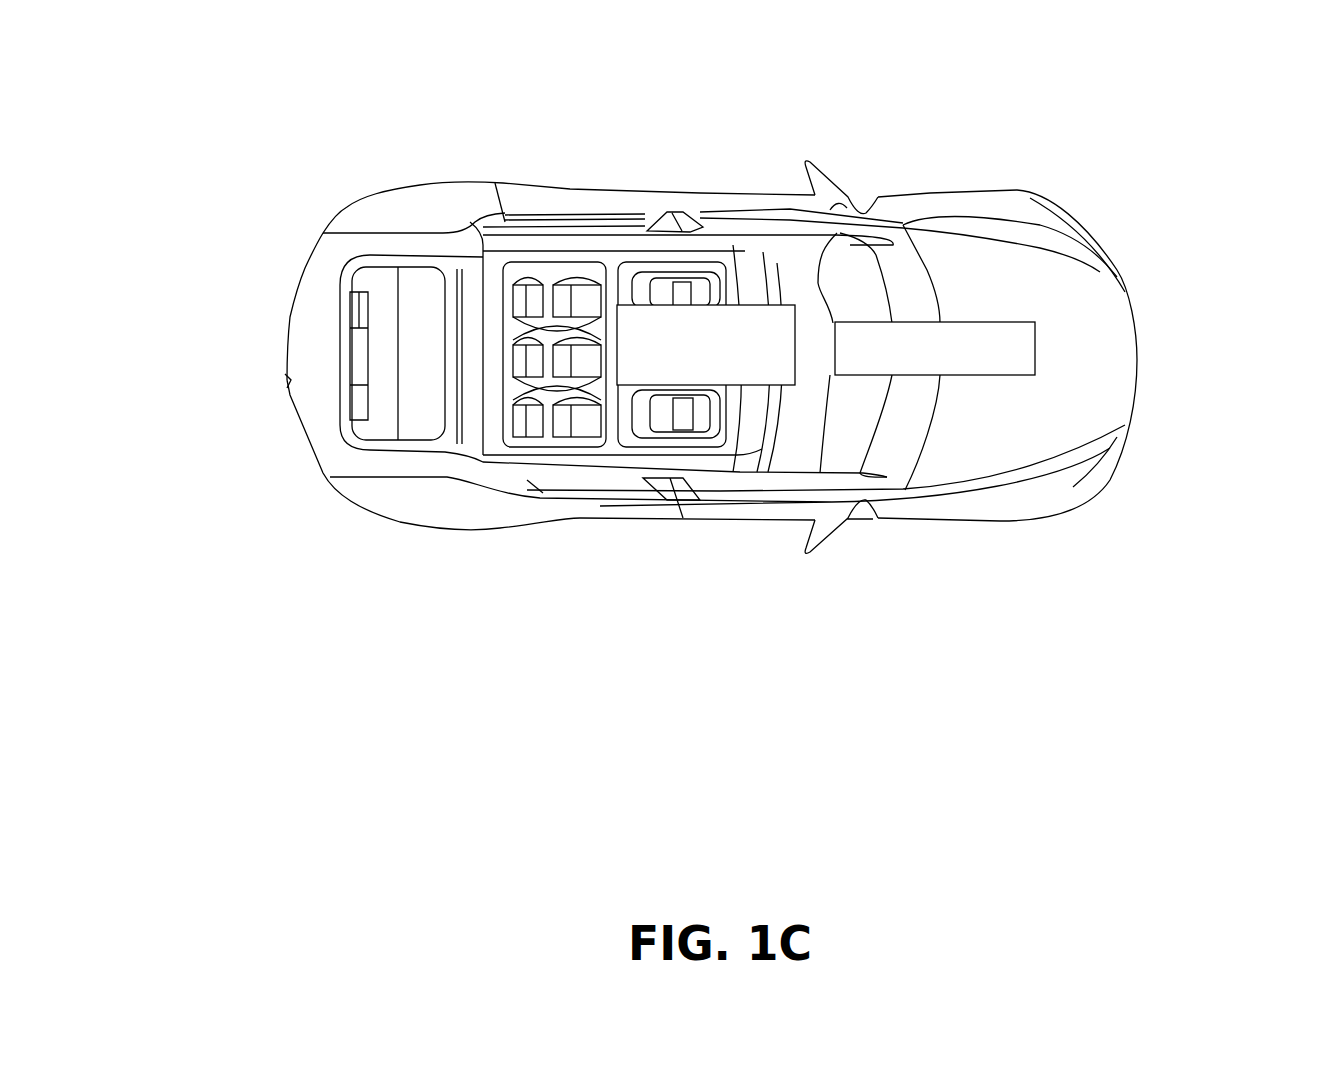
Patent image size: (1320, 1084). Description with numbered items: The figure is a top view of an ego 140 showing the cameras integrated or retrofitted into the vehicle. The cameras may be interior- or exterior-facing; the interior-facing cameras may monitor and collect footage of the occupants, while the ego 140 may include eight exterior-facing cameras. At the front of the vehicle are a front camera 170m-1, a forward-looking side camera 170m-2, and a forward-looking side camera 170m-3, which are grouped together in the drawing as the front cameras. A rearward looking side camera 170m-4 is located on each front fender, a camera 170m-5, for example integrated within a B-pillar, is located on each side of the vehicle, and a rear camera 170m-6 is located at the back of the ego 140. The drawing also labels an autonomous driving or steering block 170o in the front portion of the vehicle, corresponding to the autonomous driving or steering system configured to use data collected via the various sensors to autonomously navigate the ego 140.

The ego 140 is at (1066, 120).
The front camera 170m-1 is at (706, 345).
The forward-looking side camera 170m-2 is at (706, 345).
The forward-looking side camera 170m-3 is at (706, 345).
The rearward looking side camera 170m-4 is at (872, 562).
The camera 170m-5 is at (646, 597).
The rear camera 170m-6 is at (288, 382).
The autonomous driving or steering module 170o is at (988, 307).